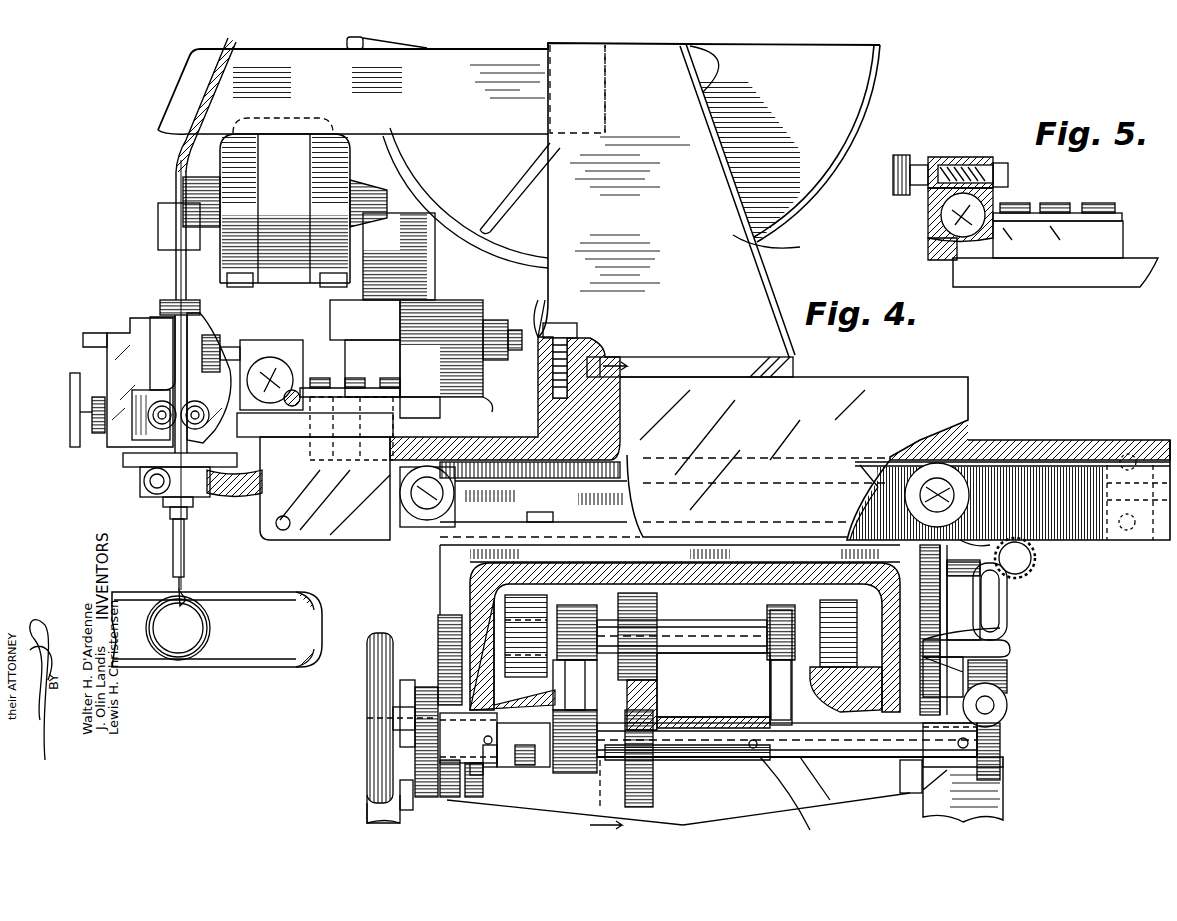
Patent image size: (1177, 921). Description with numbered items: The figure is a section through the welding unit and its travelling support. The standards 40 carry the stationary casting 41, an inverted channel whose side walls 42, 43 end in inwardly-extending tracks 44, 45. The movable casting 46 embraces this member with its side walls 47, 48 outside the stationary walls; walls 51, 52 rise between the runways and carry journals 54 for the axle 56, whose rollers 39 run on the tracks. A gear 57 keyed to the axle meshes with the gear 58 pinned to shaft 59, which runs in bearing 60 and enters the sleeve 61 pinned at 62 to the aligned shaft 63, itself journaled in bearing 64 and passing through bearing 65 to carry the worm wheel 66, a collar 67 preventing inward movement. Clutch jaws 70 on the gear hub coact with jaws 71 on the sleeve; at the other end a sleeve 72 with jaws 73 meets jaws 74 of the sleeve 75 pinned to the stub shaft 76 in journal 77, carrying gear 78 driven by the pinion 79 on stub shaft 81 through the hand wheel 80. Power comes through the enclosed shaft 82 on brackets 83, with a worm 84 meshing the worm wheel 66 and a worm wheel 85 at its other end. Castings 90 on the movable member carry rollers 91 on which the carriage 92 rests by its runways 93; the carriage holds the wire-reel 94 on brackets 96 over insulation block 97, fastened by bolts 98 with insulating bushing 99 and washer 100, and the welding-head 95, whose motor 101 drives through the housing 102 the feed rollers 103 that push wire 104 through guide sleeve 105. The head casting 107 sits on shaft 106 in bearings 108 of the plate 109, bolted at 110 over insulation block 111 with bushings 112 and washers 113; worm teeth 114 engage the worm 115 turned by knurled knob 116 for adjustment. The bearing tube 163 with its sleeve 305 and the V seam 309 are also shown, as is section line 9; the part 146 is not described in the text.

In FIG. 4, the section line 9 is at (606, 594).
In FIG. 4, the roller 39 is at (547, 585).
In FIG. 4, the standard 40 is at (368, 812).
In FIG. 4, the casting 41 is at (710, 585).
In FIG. 4, the side wall 42 is at (470, 598).
In FIG. 4, the side wall 43 is at (982, 608).
In FIG. 4, the track 44 is at (526, 636).
In FIG. 4, the track 45 is at (838, 678).
In FIG. 4, the casting 46 is at (700, 543).
In FIG. 4, the side wall 47 is at (450, 615).
In FIG. 4, the side wall 48 is at (1008, 584).
In FIG. 4, the wall 51 is at (568, 697).
In FIG. 4, the wall 52 is at (790, 688).
In FIG. 4, the journal 54 is at (572, 616).
In FIG. 4, the axle 56 is at (735, 636).
In FIG. 4, the gear 57 is at (657, 612).
In FIG. 4, the gear 58 is at (653, 805).
In FIG. 4, the shaft 59 is at (688, 730).
In FIG. 4, the bearing 60 is at (575, 752).
In FIG. 4, the sleeve 61 is at (753, 750).
In FIG. 4, the pin 62 is at (772, 790).
In FIG. 4, the shaft 63 is at (730, 735).
In FIG. 4, the bearing 64 is at (822, 792).
In FIG. 4, the bearing 65 is at (1003, 797).
In FIG. 4, the worm wheel 66 is at (1002, 746).
In FIG. 4, the collar 67 is at (1002, 727).
In FIG. 4, the clutch jaws 70 is at (683, 766).
In FIG. 4, the clutch jaws 71 is at (668, 712).
In FIG. 4, the sleeve 72 is at (522, 768).
In FIG. 4, the clutch jaws 73 is at (496, 770).
In FIG. 4, the clutch jaws 74 is at (496, 732).
In FIG. 4, the sleeve 75 is at (410, 772).
In FIG. 4, the stub shaft 76 is at (478, 778).
In FIG. 4, the journal 77 is at (372, 722).
In FIG. 4, the gear 78 is at (425, 690).
In FIG. 4, the pinion 79 is at (400, 716).
In FIG. 4, the hand wheel 80 is at (378, 732).
In FIG. 4, the stub shaft 81 is at (380, 742).
In FIG. 4, the enclosed shaft 82 is at (1002, 629).
In FIG. 4, the bracket 83 is at (1012, 651).
In FIG. 4, the worm 84 is at (1010, 690).
In FIG. 4, the worm wheel 85 is at (1037, 560).
In FIG. 4, the casting 90 is at (500, 522).
In FIG. 4, the roller 91 is at (948, 490).
In FIG. 4, the carriage 92 is at (902, 393).
In FIG. 5, the carriage 92 is at (1132, 275).
In FIG. 4, the runway 93 is at (1102, 465).
In FIG. 4, the wire-reel 94 is at (850, 84).
In FIG. 4, the welding-head 95 is at (151, 301).
In FIG. 4, the bracket 96 is at (792, 242).
In FIG. 4, the insulation block 97 is at (545, 365).
In FIG. 4, the bolt 98 is at (572, 326).
In FIG. 4, the insulating bushing 99 is at (612, 356).
In FIG. 4, the washer 100 is at (590, 342).
In FIG. 4, the motor 101 is at (285, 202).
In FIG. 4, the housing 102 is at (442, 305).
In FIG. 4, the wire feed rollers 103 is at (168, 440).
In FIG. 4, the wire 104 is at (176, 152).
In FIG. 4, the guide sleeve 105 is at (173, 547).
In FIG. 4, the shaft 106 is at (270, 403).
In FIG. 5, the shaft 106 is at (968, 232).
In FIG. 4, the casting 107 is at (356, 330).
In FIG. 4, the bearing 108 is at (271, 374).
In FIG. 5, the bearing 108 is at (940, 224).
In FIG. 4, the plate 109 is at (345, 412).
In FIG. 5, the plate 109 is at (1073, 232).
In FIG. 4, the bolt 110 is at (365, 388).
In FIG. 5, the bolt 110 is at (1055, 212).
In FIG. 4, the insulation block 111 is at (303, 432).
In FIG. 5, the insulation block 111 is at (945, 260).
In FIG. 4, the insulating bushing 112 is at (440, 413).
In FIG. 4, the washer 113 is at (487, 398).
In FIG. 5, the washer 113 is at (1122, 218).
In FIG. 5, the worm teeth 114 is at (930, 202).
In FIG. 5, the worm 115 is at (965, 166).
In FIG. 4, the knurled knob 116 is at (222, 340).
In FIG. 5, the knurled knob 116 is at (905, 155).
In FIG. 4, the strip 146 is at (146, 652).
In FIG. 4, the bearing tube 163 is at (196, 622).
In FIG. 4, the sleeve 305 is at (210, 636).
In FIG. 4, the V-shaped seam 309 is at (180, 593).